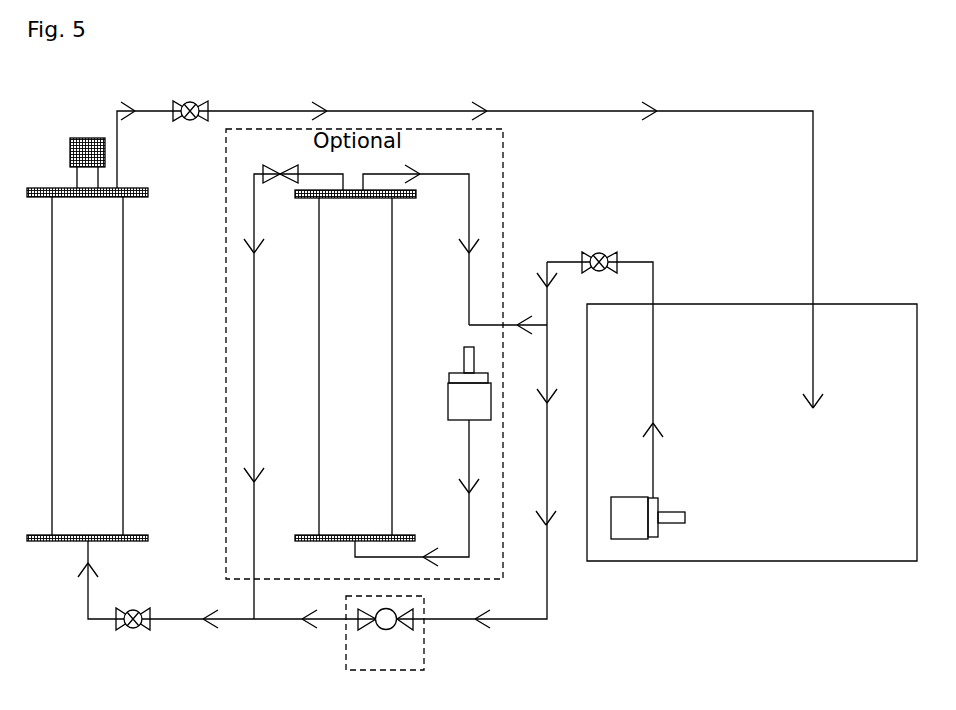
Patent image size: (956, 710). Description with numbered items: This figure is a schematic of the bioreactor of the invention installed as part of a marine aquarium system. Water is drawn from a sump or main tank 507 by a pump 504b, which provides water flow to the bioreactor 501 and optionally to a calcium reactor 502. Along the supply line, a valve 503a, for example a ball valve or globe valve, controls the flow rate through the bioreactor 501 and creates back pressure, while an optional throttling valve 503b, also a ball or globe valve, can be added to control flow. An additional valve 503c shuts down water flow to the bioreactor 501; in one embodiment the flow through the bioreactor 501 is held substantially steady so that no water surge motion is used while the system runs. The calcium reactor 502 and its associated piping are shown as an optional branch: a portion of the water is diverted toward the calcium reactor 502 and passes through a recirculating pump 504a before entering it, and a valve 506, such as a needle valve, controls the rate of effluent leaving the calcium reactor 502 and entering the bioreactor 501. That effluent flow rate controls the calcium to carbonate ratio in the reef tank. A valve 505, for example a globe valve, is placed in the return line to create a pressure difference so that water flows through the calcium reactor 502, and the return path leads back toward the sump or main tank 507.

The bioreactor 501 is at (87, 339).
The calcium reactor 502 is at (355, 365).
The valve 503a is at (190, 121).
The throttling valve 503b is at (601, 251).
The valve 503c is at (132, 608).
The recirculating pump 504a is at (452, 383).
The pump 504b is at (640, 506).
The valve 505 is at (385, 633).
The valve 506 is at (280, 164).
The sump or main tank 507 is at (752, 421).